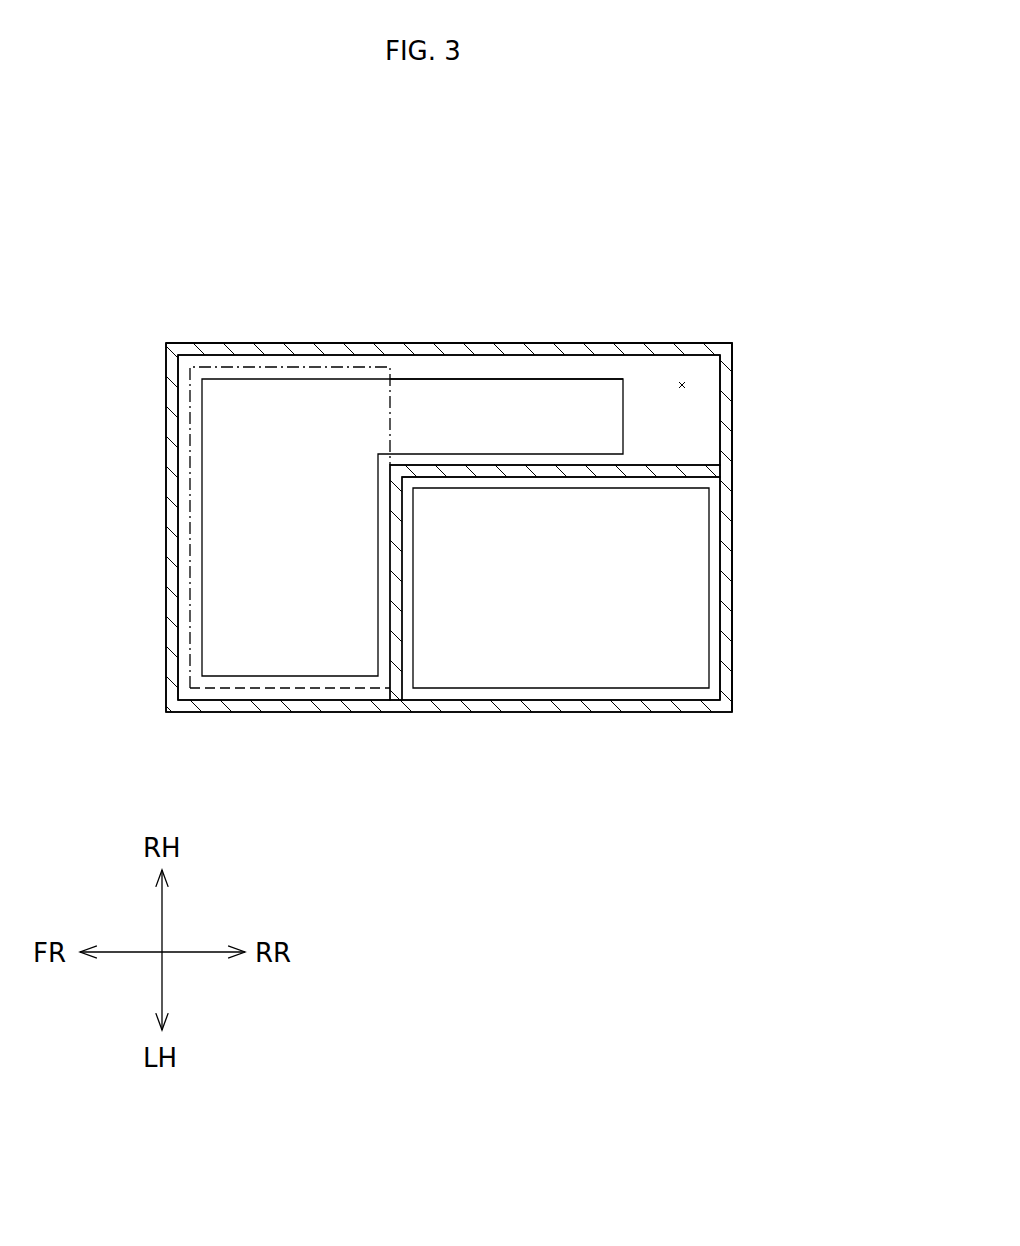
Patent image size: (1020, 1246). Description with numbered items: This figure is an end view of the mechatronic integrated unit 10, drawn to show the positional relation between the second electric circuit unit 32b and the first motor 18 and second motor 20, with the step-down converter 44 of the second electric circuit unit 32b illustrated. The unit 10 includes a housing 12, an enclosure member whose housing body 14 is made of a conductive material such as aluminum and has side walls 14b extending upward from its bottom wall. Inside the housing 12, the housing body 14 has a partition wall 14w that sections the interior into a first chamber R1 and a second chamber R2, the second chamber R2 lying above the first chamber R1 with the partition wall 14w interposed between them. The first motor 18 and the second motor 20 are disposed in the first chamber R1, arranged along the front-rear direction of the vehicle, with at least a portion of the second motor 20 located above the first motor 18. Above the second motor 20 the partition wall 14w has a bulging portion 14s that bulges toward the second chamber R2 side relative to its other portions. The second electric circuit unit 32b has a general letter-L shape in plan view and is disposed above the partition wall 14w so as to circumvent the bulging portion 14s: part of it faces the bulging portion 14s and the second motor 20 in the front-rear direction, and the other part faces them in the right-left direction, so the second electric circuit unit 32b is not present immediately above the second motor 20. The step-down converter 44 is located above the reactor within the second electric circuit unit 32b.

The mechatronic integrated unit 10 is at (725, 220).
The housing 12 is at (750, 322).
The housing body 14 is at (750, 697).
The side wall 14b is at (165, 423).
The bulging portion 14s is at (665, 465).
The partition wall 14w is at (682, 385).
The first motor 18 is at (200, 493).
The second motor 20 is at (582, 690).
The second electric circuit unit 32b is at (533, 365).
The step-down converter 44 is at (446, 376).
The first chamber R1 is at (715, 602).
The second chamber R2 is at (692, 428).